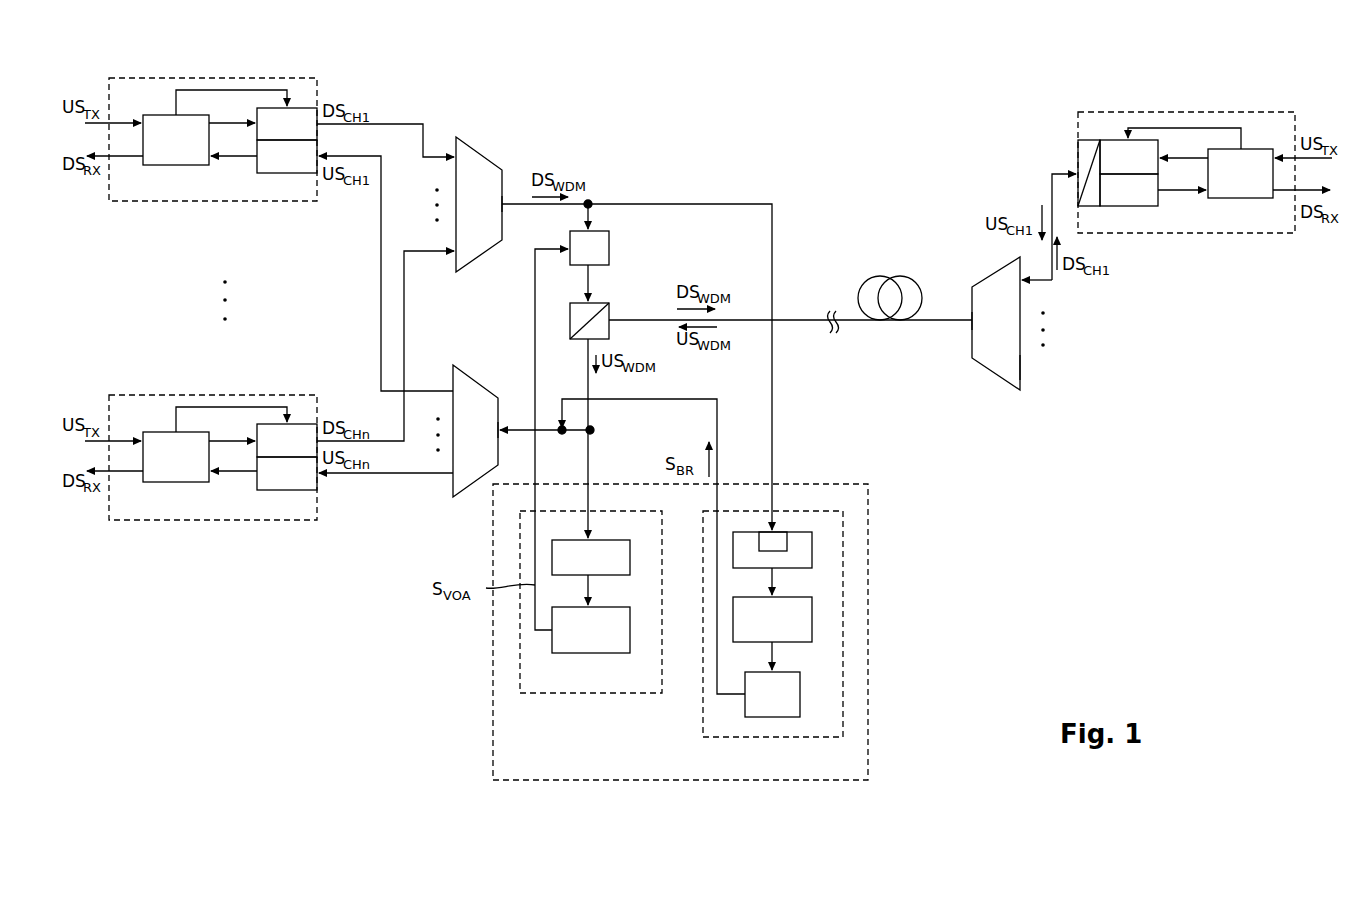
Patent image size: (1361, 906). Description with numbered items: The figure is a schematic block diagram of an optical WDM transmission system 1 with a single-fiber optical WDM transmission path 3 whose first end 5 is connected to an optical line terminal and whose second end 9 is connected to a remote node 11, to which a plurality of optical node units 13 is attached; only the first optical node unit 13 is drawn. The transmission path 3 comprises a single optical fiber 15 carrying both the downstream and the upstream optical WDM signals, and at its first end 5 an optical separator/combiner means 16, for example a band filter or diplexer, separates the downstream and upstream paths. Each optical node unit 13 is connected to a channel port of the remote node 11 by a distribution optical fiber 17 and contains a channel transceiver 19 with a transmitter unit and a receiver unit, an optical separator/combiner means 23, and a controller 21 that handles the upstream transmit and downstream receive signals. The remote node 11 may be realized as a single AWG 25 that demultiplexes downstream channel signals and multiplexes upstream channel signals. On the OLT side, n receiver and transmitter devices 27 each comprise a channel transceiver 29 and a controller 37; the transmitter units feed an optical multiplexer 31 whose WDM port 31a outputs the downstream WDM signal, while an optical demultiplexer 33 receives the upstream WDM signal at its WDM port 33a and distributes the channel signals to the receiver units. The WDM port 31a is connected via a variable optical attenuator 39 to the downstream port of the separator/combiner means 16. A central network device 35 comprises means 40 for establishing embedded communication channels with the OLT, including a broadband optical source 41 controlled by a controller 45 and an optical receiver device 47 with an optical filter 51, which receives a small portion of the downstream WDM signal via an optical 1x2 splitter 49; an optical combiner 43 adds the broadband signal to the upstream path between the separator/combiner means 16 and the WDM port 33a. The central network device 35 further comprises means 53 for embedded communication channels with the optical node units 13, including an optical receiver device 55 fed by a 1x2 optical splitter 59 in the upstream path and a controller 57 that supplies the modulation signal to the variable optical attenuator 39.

The optical WDM transmission system 1 is at (748, 96).
The optical WDM transmission path 3 is at (798, 310).
The first end 5 is at (505, 222).
The second end 9 is at (968, 327).
The remote node 11 is at (980, 265).
The optical node unit 13 is at (1180, 112).
The optical fiber 15 is at (880, 326).
The optical separator/combiner means 16 is at (580, 341).
The optical fiber 17 is at (1040, 183).
The channel transceiver 19 is at (1140, 208).
The controller 21 is at (1240, 173).
The optical separator/combiner means 23 is at (1078, 151).
The AWG 25 is at (1000, 365).
The receiver and transmitter device 27 is at (256, 78).
The channel transceiver 29 is at (290, 176).
The optical multiplexer 31 is at (478, 162).
The WDM port 31a is at (503, 200).
The optical demultiplexer 33 is at (463, 377).
The WDM port 33a is at (500, 432).
The central network device 35 is at (492, 681).
The controller 37 is at (176, 298).
The variable optical attenuator 39 is at (598, 240).
The means for establishing downstream and upstream ECCs 40 is at (702, 709).
The broadband optical source 41 is at (772, 694).
The optical combiner 43 is at (563, 436).
The controller 45 is at (772, 619).
The optical receiver device 47 is at (797, 555).
The optical 1x2 splitter 49 is at (595, 207).
The optical filter 51 is at (778, 531).
The means for establishing downstream and upstream ECCs 53 is at (558, 694).
The optical receiver device 55 is at (591, 557).
The controller 57 is at (591, 630).
The 1x2 optical splitter 59 is at (592, 436).